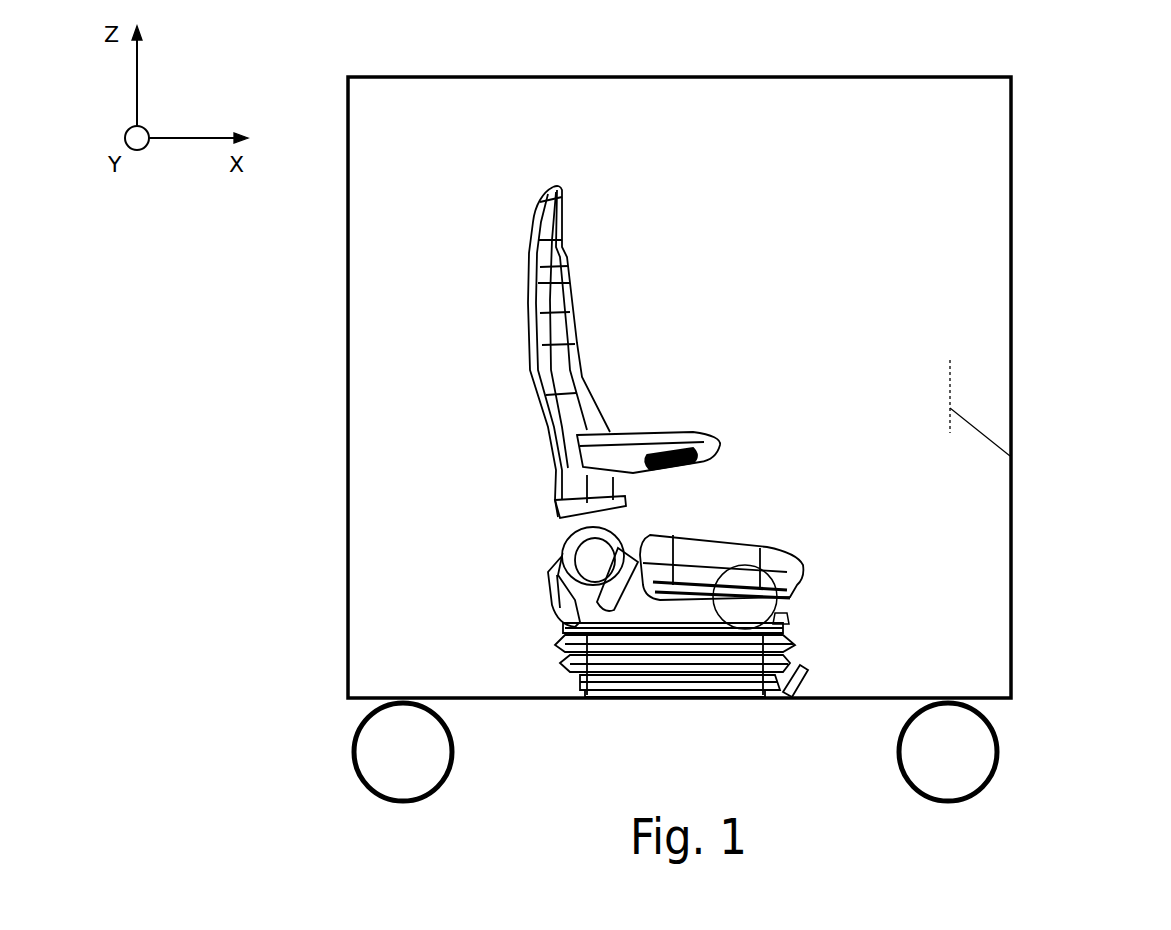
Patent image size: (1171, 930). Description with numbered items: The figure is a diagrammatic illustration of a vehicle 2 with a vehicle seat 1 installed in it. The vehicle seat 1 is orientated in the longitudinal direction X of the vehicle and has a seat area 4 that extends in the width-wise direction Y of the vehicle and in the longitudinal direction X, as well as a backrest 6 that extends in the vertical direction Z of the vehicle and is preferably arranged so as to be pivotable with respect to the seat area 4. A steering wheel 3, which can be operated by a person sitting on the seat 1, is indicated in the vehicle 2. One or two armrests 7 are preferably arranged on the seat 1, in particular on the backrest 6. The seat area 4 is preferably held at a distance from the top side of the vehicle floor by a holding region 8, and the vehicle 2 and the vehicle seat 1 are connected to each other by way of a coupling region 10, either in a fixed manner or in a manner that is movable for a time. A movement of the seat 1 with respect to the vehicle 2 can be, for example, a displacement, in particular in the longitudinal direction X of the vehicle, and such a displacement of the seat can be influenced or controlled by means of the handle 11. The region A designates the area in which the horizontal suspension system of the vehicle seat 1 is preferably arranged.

The vehicle seat 1 is at (388, 369).
The vehicle 2 is at (289, 471).
The steering wheel 3 is at (950, 399).
The seat area 4 is at (703, 563).
The backrest 6 is at (555, 302).
The armrest 7 is at (722, 447).
The holding region 8 is at (569, 643).
The coupling region 10 is at (733, 700).
The handle 11 is at (806, 670).
The region of the horizontal suspension system A is at (795, 600).